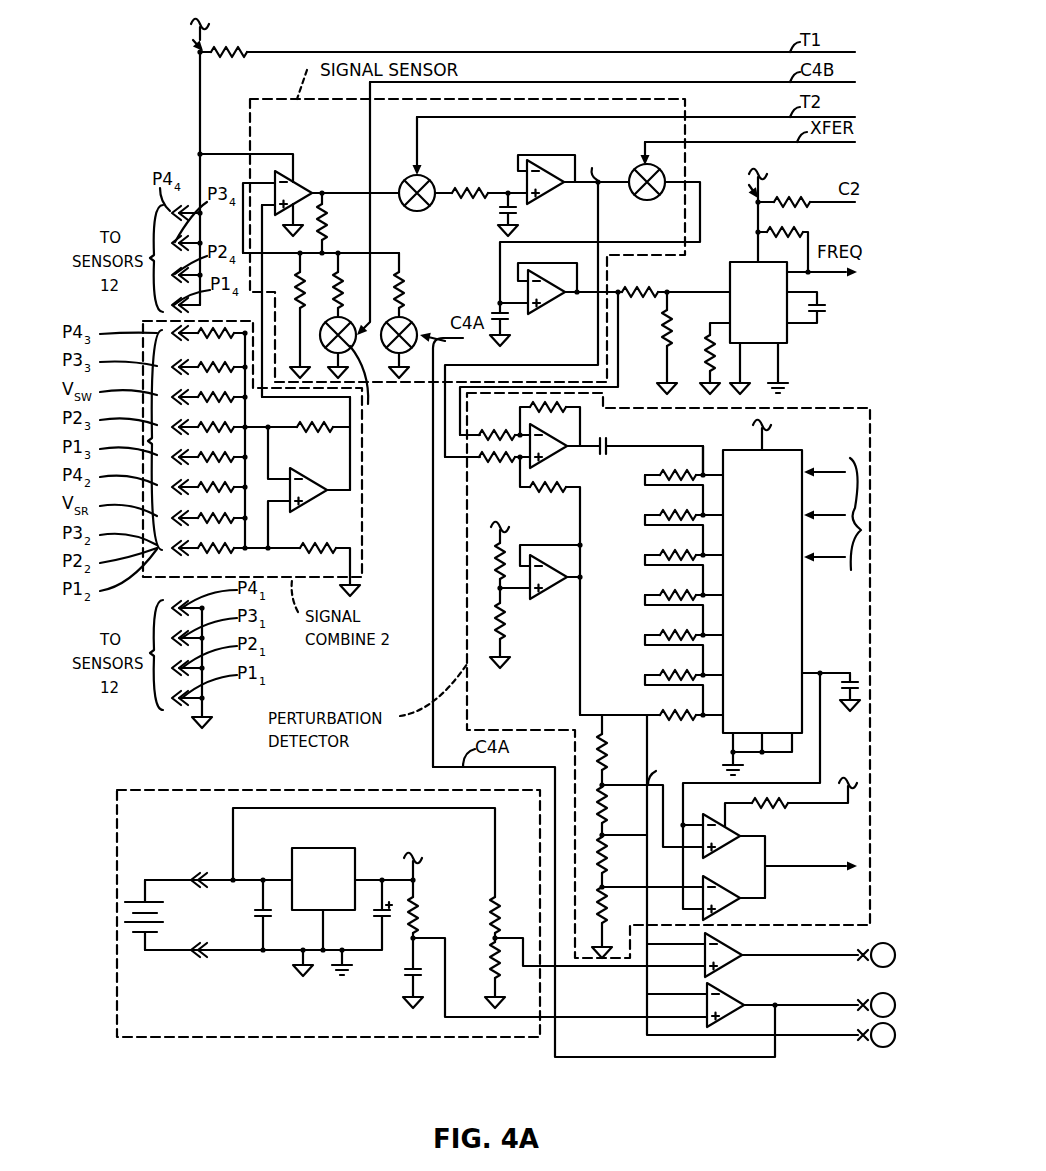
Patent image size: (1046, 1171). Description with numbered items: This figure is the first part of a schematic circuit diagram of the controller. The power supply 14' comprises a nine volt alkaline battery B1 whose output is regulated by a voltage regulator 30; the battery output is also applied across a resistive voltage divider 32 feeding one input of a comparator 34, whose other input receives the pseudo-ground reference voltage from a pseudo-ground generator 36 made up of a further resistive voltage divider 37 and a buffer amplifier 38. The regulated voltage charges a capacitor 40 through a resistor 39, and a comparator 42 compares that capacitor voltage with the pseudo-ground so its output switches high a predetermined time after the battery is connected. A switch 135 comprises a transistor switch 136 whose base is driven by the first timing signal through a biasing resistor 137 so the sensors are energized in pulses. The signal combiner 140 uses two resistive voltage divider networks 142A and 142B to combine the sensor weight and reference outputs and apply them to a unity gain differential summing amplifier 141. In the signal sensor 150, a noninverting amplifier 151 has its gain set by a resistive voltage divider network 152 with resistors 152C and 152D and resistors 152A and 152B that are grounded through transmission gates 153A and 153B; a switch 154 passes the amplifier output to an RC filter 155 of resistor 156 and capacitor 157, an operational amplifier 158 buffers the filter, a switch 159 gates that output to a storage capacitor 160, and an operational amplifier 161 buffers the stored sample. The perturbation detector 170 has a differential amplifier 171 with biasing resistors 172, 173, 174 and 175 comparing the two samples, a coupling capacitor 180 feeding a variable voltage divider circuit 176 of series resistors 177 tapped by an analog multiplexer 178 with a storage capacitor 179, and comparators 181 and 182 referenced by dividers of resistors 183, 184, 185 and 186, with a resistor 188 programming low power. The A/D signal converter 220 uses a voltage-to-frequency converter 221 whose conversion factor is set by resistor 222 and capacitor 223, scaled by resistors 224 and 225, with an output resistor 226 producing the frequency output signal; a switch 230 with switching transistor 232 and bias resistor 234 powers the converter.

The switch 135 is at (190, 55).
The transistor switch 136 is at (212, 54).
The biasing resistor 137 is at (248, 50).
The signal sensor 150 is at (250, 126).
The noninverting amplifier 151 is at (299, 178).
The resistive voltage divider network 152 is at (346, 249).
The resistor 152A is at (404, 292).
The resistor 152B is at (334, 288).
The resistor 152C is at (326, 225).
The resistor 152D is at (295, 288).
The transmission gate 153A is at (418, 312).
The transmission gate 153B is at (383, 382).
The switch 154 is at (429, 180).
The RC filter 155 is at (499, 171).
The resistor 156 is at (483, 203).
The capacitor 157 is at (518, 212).
The operational amplifier 158 is at (546, 160).
The switch 159 is at (634, 205).
The storage capacitor 160 is at (508, 325).
The operational amplifier 161 is at (541, 320).
The perturbation detector 170 is at (467, 680).
The differential amplifier 171 is at (561, 457).
The biasing resistor 172 is at (512, 432).
The biasing resistor 173 is at (500, 462).
The biasing resistor 174 is at (536, 409).
The biasing resistor 175 is at (542, 493).
The variable voltage divider circuit 176 is at (631, 618).
The resistors 177 is at (677, 586).
The analog multiplexer 178 is at (802, 655).
The storage capacitor 179 is at (830, 706).
The coupling capacitor 180 is at (610, 443).
The comparator 181 is at (741, 832).
The comparator 182 is at (740, 866).
The resistor 183 is at (604, 741).
The resistor 184 is at (604, 795).
The resistor 185 is at (604, 845).
The resistor 186 is at (604, 897).
The resistor 188 is at (785, 812).
The A/D signal converter 220 is at (807, 340).
The voltage-to-frequency converter 221 is at (728, 274).
The resistor 222 is at (706, 341).
The capacitor 223 is at (824, 316).
The resistor 224 is at (657, 286).
The resistor 225 is at (665, 344).
The output resistor 226 is at (794, 232).
The switch 230 is at (774, 175).
The switching transistor 232 is at (753, 206).
The bias resistor 234 is at (791, 196).
The signal combiner 140 is at (362, 525).
The unity gain differential summing amplifier 141 is at (311, 461).
The resistive voltage divider network 142A is at (335, 423).
The resistive voltage divider network 142B is at (298, 547).
The voltage regulator 30 is at (329, 848).
The resistive voltage divider 32 is at (485, 947).
The comparator 34 is at (739, 962).
The pseudo-ground generator 36 is at (525, 623).
The resistive voltage divider 37 is at (488, 590).
The buffer amplifier 38 is at (545, 596).
The resistor 39 is at (420, 905).
The capacitor 40 is at (405, 981).
The comparator 42 is at (734, 994).
The power supply 14' is at (328, 932).
The battery B1 is at (169, 917).